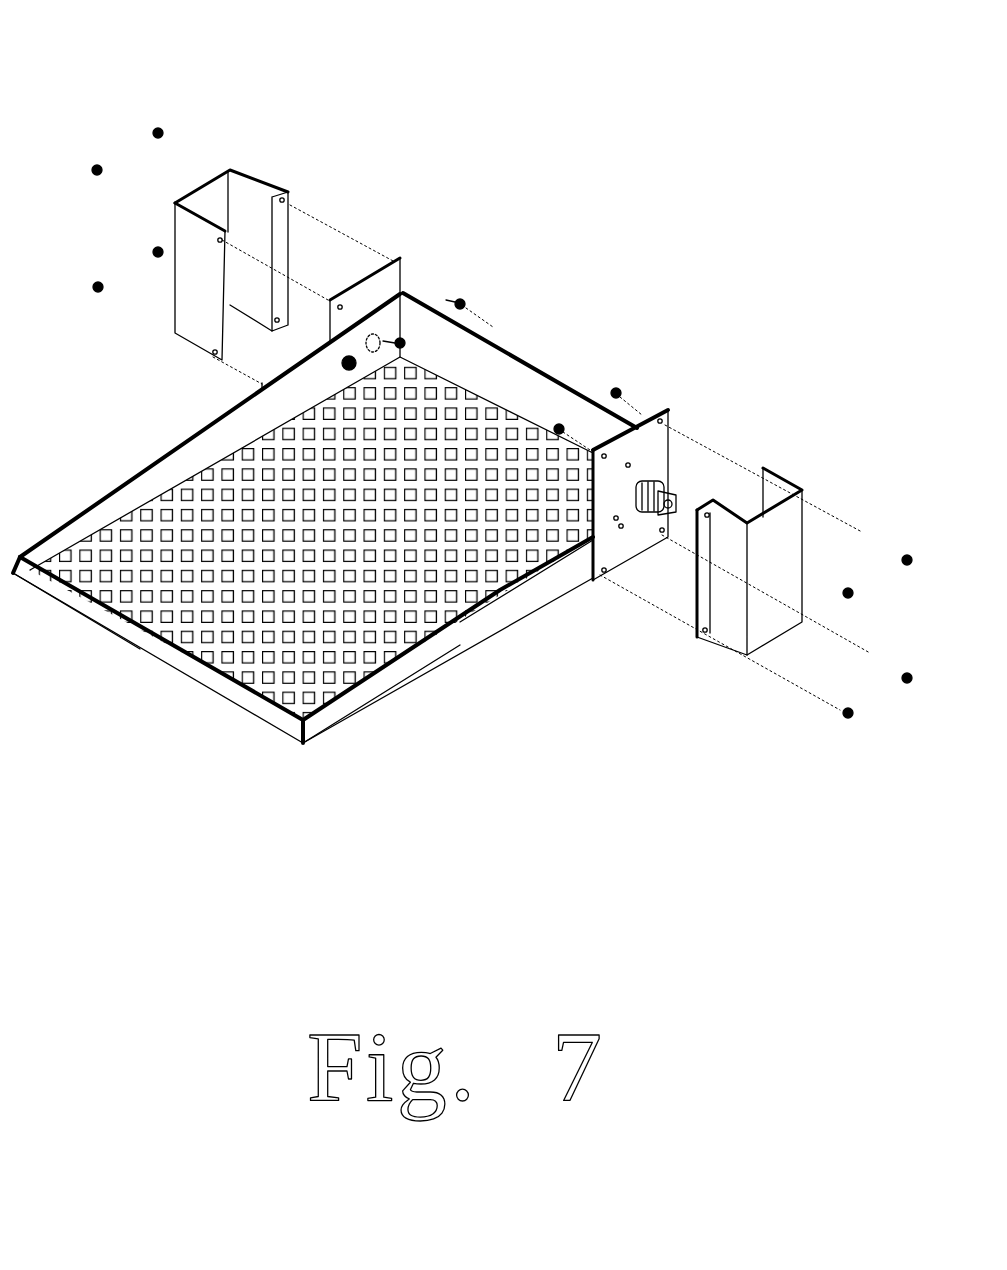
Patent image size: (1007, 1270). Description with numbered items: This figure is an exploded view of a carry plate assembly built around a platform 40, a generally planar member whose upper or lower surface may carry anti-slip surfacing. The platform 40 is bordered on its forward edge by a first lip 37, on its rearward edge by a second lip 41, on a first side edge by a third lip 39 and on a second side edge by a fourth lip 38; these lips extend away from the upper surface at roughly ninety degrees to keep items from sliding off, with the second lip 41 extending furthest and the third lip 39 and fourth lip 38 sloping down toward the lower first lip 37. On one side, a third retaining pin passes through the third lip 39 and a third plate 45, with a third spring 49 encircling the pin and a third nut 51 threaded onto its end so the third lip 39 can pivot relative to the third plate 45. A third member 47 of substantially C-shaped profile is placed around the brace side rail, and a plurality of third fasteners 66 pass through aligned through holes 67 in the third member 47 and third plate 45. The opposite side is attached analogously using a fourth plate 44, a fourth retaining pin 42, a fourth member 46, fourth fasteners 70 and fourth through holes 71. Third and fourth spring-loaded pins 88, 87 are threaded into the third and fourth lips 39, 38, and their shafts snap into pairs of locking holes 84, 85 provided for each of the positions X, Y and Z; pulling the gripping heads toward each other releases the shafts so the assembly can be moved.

The first lip 37 is at (138, 640).
The fourth lip 38 is at (173, 472).
The third lip 39 is at (450, 644).
The platform 40 is at (300, 590).
The second lip 41 is at (475, 367).
The fourth retaining pin 42 is at (405, 292).
The fourth plate 44 is at (360, 283).
The third plate 45 is at (652, 416).
The fourth member 46 is at (203, 197).
The third member 47 is at (768, 584).
The third spring 49 is at (657, 486).
The third nut 51 is at (672, 563).
The third fasteners 66 is at (618, 387).
The through holes 67 is at (665, 409).
The fourth fasteners 70 is at (158, 128).
The fourth through holes 71 is at (284, 193).
The locking hole 84 is at (616, 518).
The locking hole 85 is at (260, 382).
The fourth spring-loaded pin 87 is at (340, 366).
The third spring-loaded pin 88 is at (587, 541).